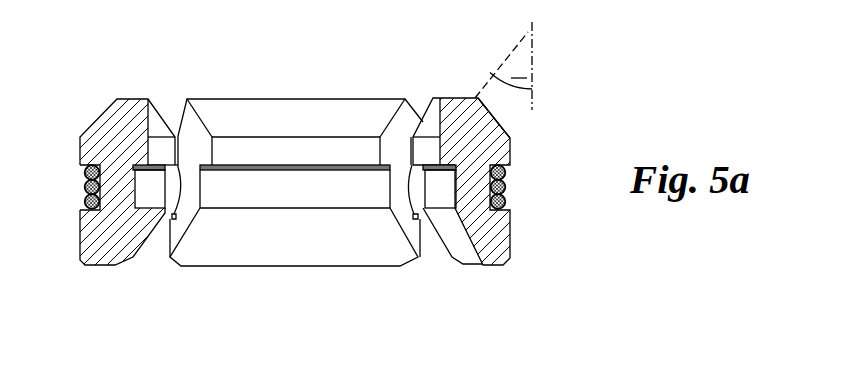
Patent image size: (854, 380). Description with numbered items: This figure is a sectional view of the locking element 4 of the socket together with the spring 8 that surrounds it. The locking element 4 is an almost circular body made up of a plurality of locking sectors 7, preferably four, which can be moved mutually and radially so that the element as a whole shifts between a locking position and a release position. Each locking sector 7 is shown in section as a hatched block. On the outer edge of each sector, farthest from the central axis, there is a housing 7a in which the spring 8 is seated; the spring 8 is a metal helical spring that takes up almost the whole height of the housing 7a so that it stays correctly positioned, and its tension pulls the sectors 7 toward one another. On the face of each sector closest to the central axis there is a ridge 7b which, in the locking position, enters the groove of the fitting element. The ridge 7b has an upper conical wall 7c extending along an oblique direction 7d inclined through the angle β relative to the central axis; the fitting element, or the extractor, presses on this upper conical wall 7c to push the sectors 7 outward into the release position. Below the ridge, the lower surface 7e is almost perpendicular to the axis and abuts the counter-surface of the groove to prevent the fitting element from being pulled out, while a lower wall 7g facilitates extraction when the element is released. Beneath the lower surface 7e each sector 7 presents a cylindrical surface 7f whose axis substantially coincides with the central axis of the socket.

The locking element 4 is at (312, 189).
The locking sector 7 is at (120, 149).
The housing 7a is at (491, 205).
The ridge 7b is at (427, 152).
The upper conical wall 7c is at (223, 115).
The oblique direction 7d is at (487, 82).
The lower surface 7e is at (244, 168).
The cylindrical surface 7f is at (437, 188).
The lower wall 7g is at (267, 245).
The spring 8 is at (83, 190).